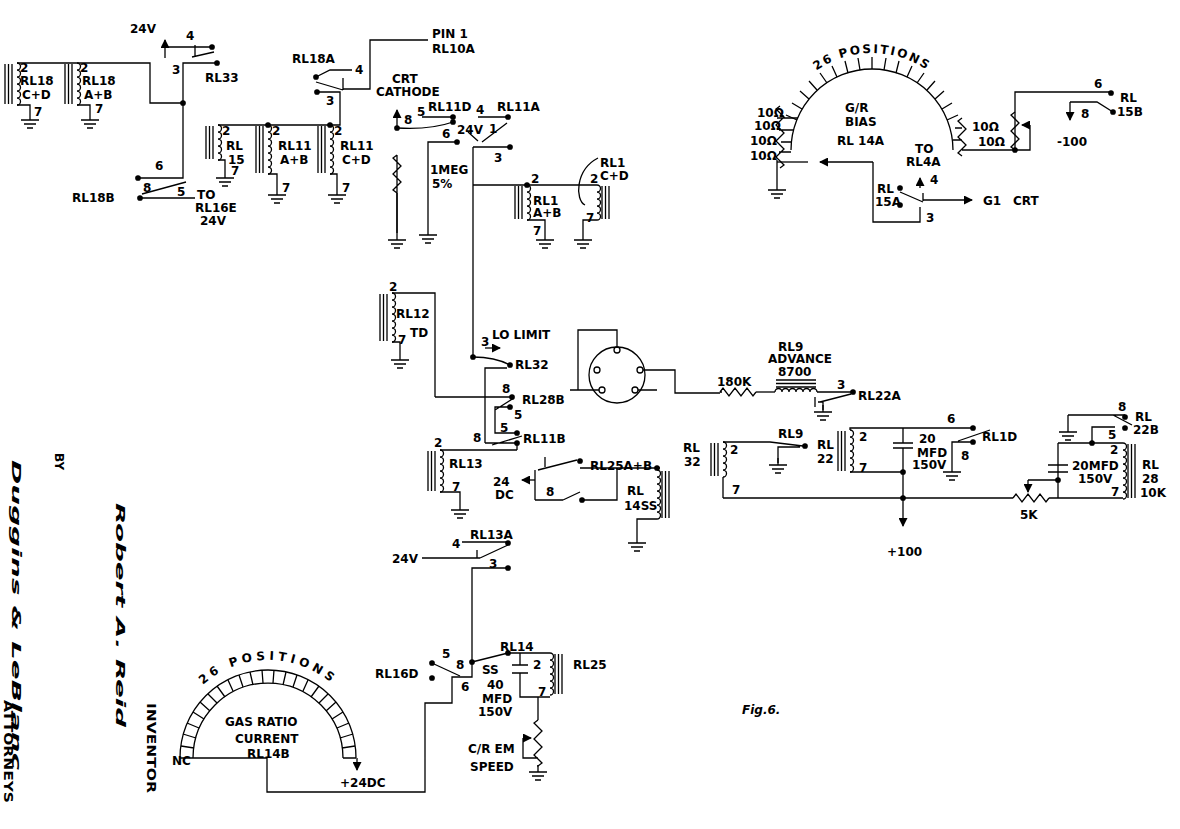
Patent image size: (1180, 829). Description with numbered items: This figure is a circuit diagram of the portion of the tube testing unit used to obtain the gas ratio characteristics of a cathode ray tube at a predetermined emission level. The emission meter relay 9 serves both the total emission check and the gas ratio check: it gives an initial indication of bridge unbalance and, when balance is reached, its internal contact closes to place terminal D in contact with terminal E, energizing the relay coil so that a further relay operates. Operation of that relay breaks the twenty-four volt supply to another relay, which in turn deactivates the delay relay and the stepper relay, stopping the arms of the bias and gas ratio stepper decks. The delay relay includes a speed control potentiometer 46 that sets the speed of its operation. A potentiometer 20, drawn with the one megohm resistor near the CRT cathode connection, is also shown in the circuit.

The potentiometer 20 is at (392, 160).
The speed control potentiometer 46 is at (548, 716).
The meter relay 9 is at (645, 383).